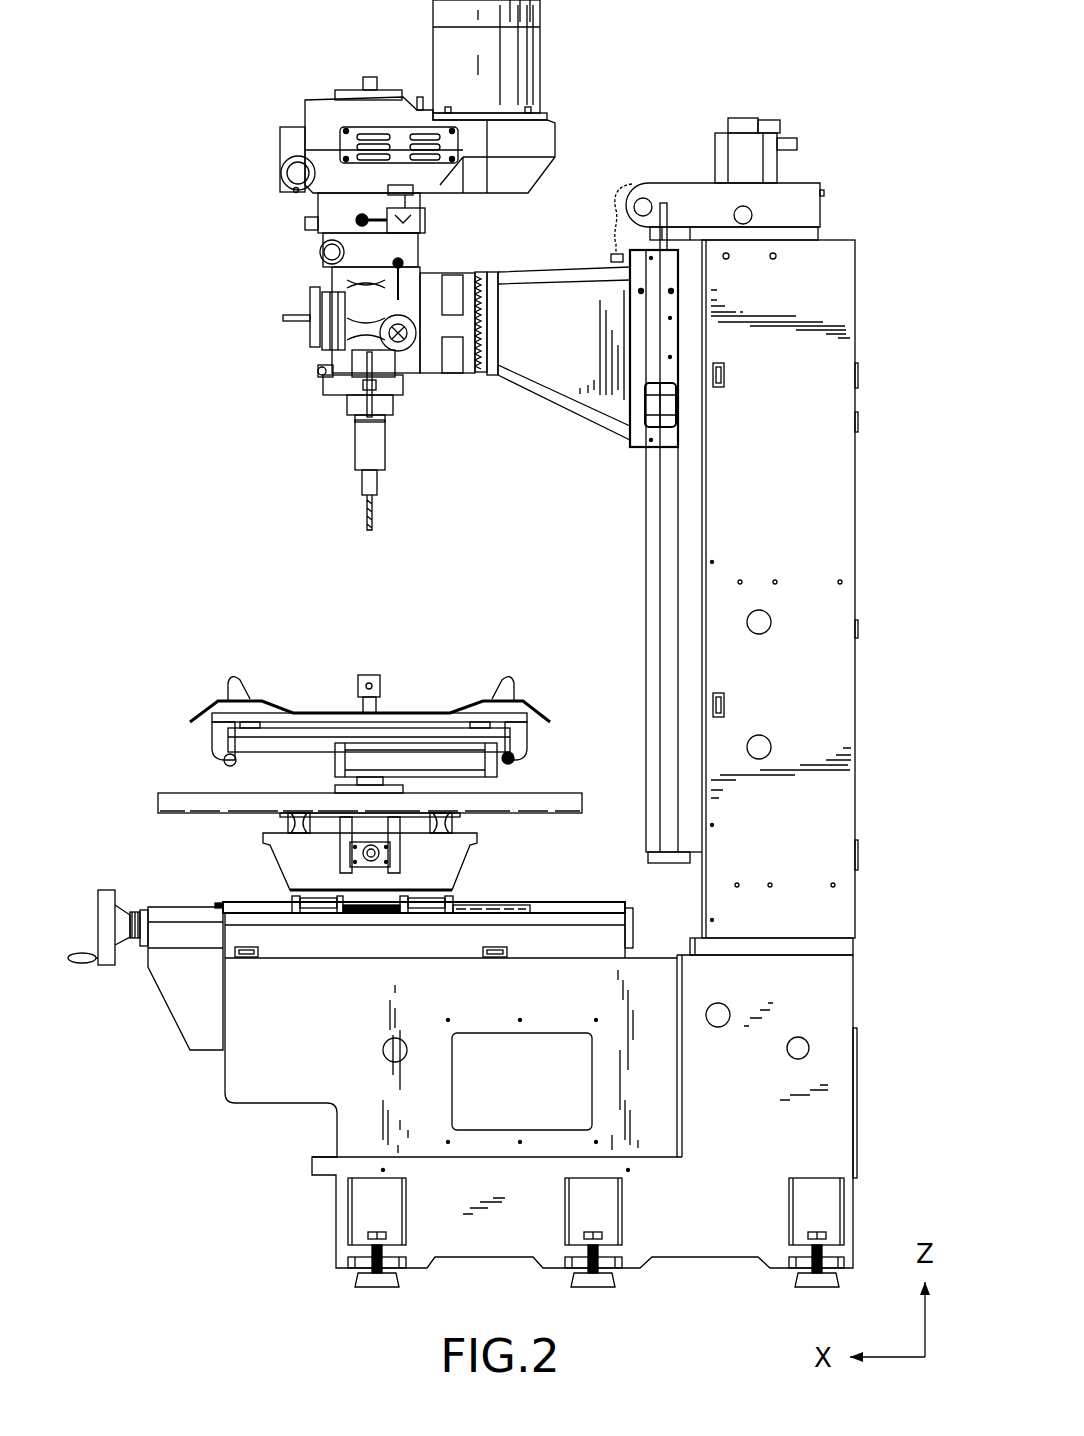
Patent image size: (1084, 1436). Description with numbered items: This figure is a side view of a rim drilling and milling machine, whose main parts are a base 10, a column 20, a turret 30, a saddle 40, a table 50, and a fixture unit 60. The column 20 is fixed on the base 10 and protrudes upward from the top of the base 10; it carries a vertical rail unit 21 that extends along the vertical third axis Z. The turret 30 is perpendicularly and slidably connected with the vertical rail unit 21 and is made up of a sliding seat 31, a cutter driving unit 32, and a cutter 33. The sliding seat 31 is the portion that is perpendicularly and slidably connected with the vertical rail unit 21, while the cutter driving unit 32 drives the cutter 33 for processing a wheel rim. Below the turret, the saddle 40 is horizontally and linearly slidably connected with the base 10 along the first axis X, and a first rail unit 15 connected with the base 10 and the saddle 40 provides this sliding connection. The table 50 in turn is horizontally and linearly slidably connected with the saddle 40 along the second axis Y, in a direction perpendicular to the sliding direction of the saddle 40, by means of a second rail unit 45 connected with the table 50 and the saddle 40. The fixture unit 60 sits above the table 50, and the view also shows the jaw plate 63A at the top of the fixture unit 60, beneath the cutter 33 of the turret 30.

The base 10 is at (858, 1073).
The first rail unit 15 is at (246, 888).
The column 20 is at (840, 508).
The vertical rail unit 21 is at (654, 548).
The turret 30 is at (405, 265).
The sliding seat 31 is at (575, 372).
The cutter driving unit 32 is at (527, 65).
The cutter 33 is at (373, 447).
The saddle 40 is at (482, 867).
The second rail unit 45 is at (482, 823).
The table 50 is at (180, 780).
The fixture unit 60 is at (334, 685).
The clamping jaw plate 63A is at (205, 690).